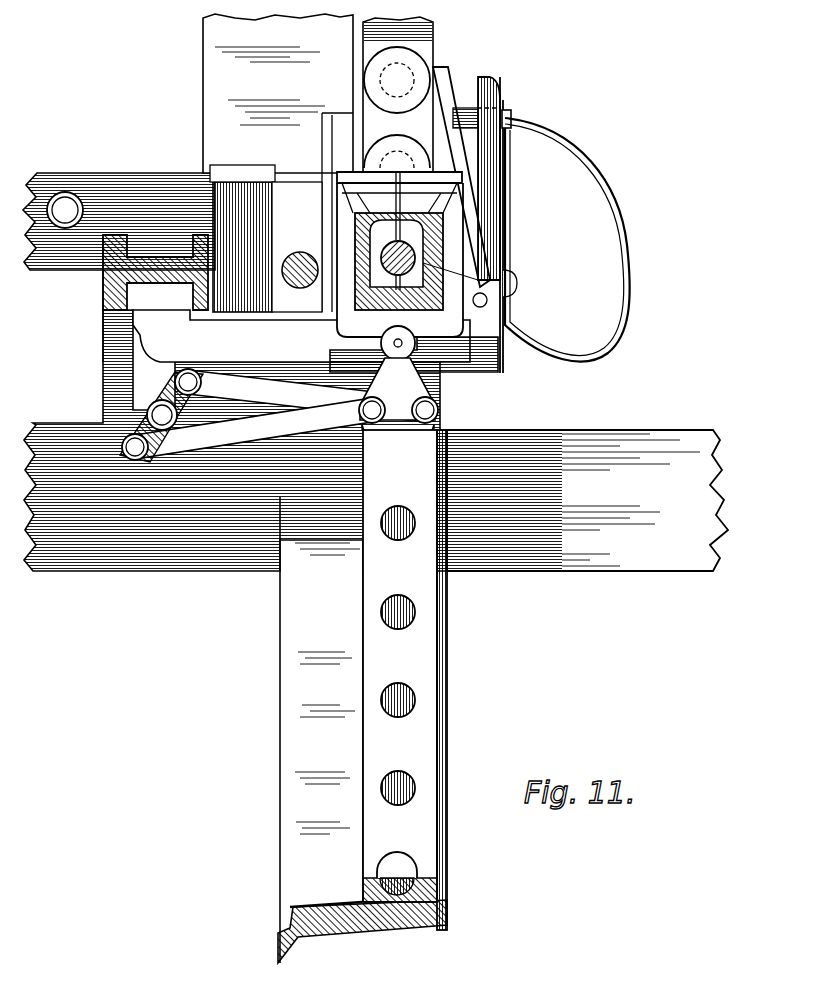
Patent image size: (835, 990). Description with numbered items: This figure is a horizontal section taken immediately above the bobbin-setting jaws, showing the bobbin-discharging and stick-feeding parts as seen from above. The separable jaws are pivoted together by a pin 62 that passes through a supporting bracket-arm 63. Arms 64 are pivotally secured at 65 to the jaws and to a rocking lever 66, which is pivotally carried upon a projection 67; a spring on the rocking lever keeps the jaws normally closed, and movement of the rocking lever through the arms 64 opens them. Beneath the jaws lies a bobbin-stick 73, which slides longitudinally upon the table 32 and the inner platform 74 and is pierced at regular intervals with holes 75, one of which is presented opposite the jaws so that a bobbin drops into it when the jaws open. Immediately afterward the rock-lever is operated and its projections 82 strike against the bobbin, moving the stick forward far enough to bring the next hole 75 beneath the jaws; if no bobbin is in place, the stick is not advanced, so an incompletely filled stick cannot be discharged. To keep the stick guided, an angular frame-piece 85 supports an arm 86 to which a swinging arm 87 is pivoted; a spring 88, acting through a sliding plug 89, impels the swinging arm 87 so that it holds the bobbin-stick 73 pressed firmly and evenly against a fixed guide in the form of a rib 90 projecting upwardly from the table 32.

The table 32 is at (376, 440).
The rib 90 is at (356, 86).
The bracket-arm 63 is at (286, 263).
The swinging arm 87 is at (441, 80).
The angular frame-piece 85 is at (489, 362).
The pin 62 is at (416, 346).
The arm 86 is at (503, 232).
The sliding plug 89 is at (506, 114).
The spring 88 is at (628, 232).
The arms 64 is at (266, 403).
The projection 67 is at (175, 385).
The rocking lever 66 is at (142, 430).
The projections 82 is at (397, 407).
The pivots 65 is at (366, 418).
The inner platform 74 is at (362, 730).
The bobbin-stick 73 is at (405, 680).
The holes 75 is at (398, 718).